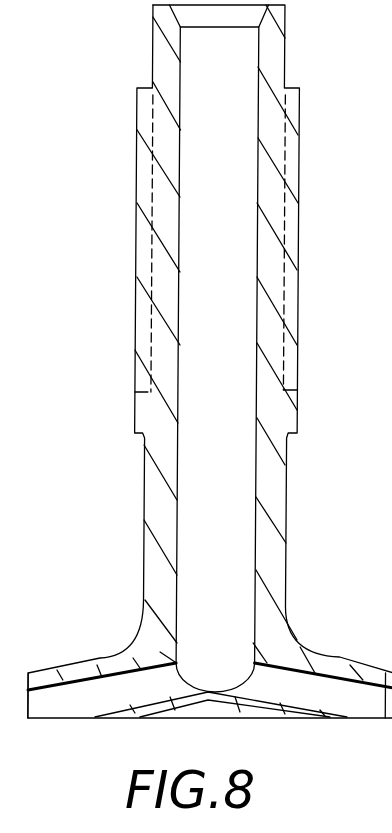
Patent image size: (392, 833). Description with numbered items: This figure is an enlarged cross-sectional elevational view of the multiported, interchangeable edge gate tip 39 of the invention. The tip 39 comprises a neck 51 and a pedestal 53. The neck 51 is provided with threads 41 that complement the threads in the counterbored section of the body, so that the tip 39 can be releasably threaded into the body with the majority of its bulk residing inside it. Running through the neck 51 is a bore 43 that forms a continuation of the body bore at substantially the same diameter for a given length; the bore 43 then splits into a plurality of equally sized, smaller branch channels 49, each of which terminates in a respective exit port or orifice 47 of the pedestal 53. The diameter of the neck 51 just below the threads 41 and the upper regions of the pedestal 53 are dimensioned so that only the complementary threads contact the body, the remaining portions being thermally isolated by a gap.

The interchangeable tip 39 is at (289, 85).
The threads 41 is at (294, 176).
The bore 43 is at (258, 82).
The exit port or orifice 47 is at (52, 717).
The branch channels 49 is at (105, 693).
The neck 51 is at (276, 487).
The pedestal 53 is at (298, 658).